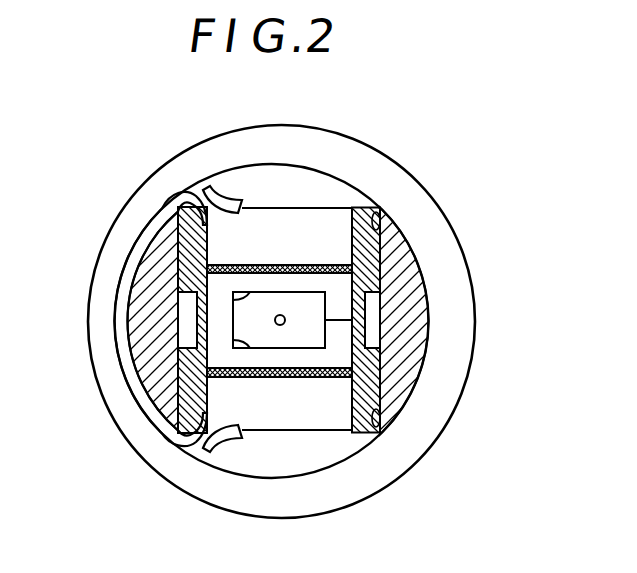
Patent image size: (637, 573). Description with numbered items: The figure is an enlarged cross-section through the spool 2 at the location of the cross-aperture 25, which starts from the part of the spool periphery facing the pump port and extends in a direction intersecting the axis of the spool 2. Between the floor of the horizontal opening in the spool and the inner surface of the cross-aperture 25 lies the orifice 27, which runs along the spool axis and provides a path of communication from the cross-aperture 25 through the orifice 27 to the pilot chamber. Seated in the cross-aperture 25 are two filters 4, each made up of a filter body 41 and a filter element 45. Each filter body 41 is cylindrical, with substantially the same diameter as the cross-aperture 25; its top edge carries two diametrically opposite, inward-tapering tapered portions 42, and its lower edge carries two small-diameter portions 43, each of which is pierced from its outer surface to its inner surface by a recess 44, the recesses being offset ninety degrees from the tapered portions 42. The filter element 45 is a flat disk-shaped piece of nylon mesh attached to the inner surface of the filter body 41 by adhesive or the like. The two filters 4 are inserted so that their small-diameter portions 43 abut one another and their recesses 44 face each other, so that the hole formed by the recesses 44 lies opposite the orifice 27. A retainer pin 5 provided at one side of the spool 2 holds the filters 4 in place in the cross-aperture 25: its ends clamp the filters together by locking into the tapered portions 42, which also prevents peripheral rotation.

The spool 2 is at (447, 209).
The filter 4 is at (387, 252).
The retainer pin 5 is at (180, 446).
The cross-aperture 25 is at (379, 206).
The orifice 27 is at (275, 320).
The filter body 41 is at (188, 231).
The tapered portions 42 is at (203, 189).
The small-diameter portions 43 is at (381, 293).
The recess 44 is at (233, 300).
The filter element 45 is at (284, 265).